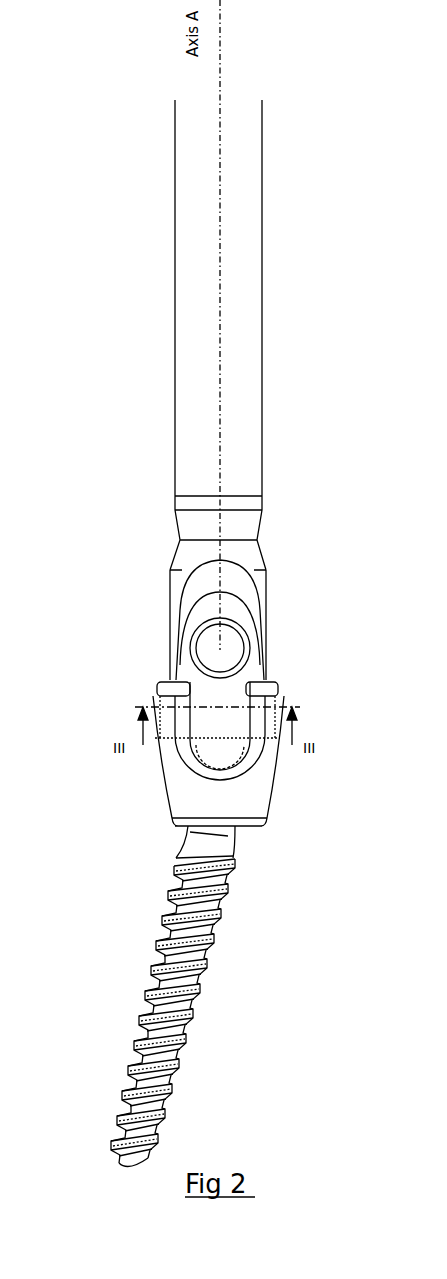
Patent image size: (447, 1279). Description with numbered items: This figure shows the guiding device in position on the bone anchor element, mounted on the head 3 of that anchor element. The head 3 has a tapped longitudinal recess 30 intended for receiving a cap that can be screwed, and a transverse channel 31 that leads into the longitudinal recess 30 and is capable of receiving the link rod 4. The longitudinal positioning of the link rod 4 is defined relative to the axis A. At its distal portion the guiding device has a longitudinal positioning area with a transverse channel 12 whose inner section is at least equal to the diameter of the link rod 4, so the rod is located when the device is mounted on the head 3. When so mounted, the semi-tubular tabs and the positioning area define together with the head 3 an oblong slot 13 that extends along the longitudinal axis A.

The head 3 is at (240, 792).
The link rod 4 is at (215, 652).
The transverse channel 12 is at (207, 612).
The oblong slot 13 is at (107, 705).
The tapped longitudinal recess 30 is at (212, 690).
The transverse channel 31 is at (213, 738).